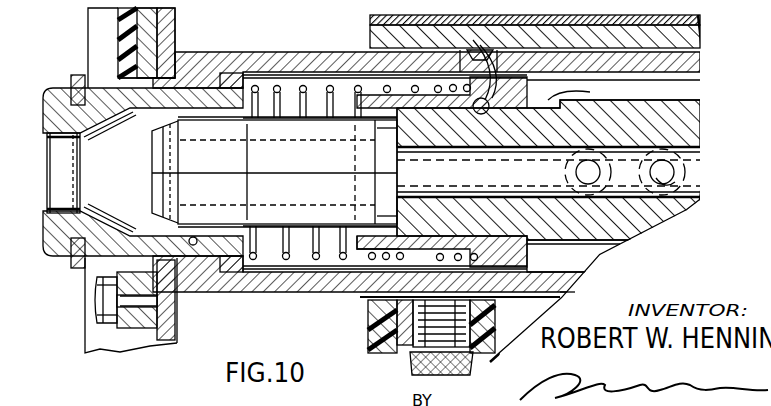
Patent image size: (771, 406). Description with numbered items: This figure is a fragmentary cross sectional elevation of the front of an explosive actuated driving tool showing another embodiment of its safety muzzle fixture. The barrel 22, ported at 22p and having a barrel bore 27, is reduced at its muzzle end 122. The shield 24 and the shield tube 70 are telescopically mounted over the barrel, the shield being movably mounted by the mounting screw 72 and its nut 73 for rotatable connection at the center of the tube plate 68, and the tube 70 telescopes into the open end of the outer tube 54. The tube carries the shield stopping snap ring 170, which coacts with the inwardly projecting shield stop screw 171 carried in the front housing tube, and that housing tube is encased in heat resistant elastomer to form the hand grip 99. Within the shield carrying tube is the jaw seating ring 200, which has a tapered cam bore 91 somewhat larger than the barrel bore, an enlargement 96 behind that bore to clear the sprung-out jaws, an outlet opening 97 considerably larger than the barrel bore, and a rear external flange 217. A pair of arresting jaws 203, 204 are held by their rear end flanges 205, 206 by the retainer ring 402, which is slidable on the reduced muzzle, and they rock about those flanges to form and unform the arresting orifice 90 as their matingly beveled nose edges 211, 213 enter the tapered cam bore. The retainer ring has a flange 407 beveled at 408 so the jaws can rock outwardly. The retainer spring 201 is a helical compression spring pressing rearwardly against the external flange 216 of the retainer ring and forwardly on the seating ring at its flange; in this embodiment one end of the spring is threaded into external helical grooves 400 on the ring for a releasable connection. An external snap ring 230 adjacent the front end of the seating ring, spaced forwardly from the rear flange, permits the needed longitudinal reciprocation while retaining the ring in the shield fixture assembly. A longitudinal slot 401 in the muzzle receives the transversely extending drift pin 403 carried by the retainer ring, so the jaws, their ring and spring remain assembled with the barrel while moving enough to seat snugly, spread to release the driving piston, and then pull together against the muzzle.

The barrel 22 is at (702, 125).
The barrel port 22p is at (680, 186).
The shield 24 is at (92, 13).
The barrel bore 27 is at (692, 162).
The outer tube 54 is at (700, 40).
The tube plate 68 is at (176, 14).
The shield tube 70 is at (690, 62).
The mounting screw 72 is at (176, 320).
The nut 73 is at (94, 321).
The arresting orifice 90 is at (152, 165).
The tapered bore 91 is at (95, 163).
The enlargement 96 is at (193, 245).
The outlet opening 97 is at (60, 184).
The hand grip 99 is at (702, 17).
The reduced muzzle end 122 is at (590, 92).
The shield stopping snap ring 170 is at (502, 21).
The shield stop screw 171 is at (412, 366).
The jaw seating ring 200 is at (68, 258).
The retainer spring 201 is at (303, 85).
The arresting jaw 203 is at (278, 85).
The arresting jaw 204 is at (272, 258).
The rear end flange 205 is at (388, 157).
The rear end flange 206 is at (388, 196).
The outer nose edge 211 is at (152, 128).
The nose edge 213 is at (152, 216).
The external flange 216 is at (583, 278).
The external flange 217 is at (233, 73).
The external snap ring 230 is at (70, 78).
The external helical grooves 400 is at (512, 265).
The longitudinal slot 401 is at (474, 103).
The retainer ring 402 is at (368, 242).
The drift pin 403 is at (473, 40).
The flange 407 is at (362, 248).
The bevel 408 is at (330, 255).